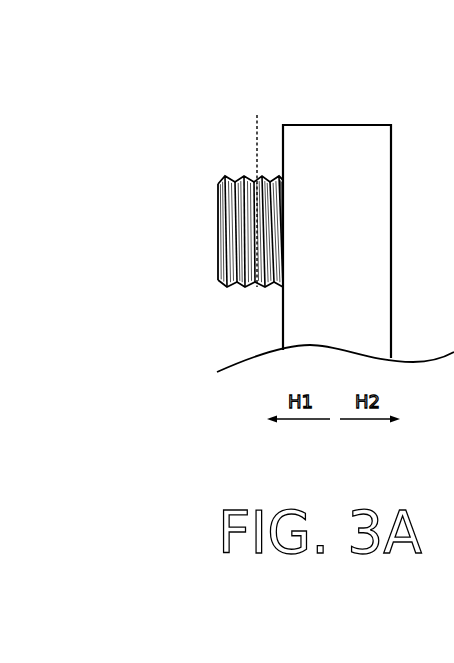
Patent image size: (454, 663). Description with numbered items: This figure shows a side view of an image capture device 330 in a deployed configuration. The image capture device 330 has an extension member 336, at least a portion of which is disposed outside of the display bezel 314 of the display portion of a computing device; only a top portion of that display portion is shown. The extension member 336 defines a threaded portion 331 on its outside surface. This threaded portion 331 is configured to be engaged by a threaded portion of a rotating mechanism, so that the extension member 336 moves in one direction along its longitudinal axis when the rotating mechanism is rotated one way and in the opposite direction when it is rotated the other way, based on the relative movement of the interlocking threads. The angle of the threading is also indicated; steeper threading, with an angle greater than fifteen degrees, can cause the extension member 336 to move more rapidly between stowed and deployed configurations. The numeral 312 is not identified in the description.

The body 312 is at (425, 123).
The image capture device 330 is at (194, 116).
The threaded portion 331 is at (218, 214).
The extension member 336 is at (208, 268).
The display bezel 314 is at (266, 314).